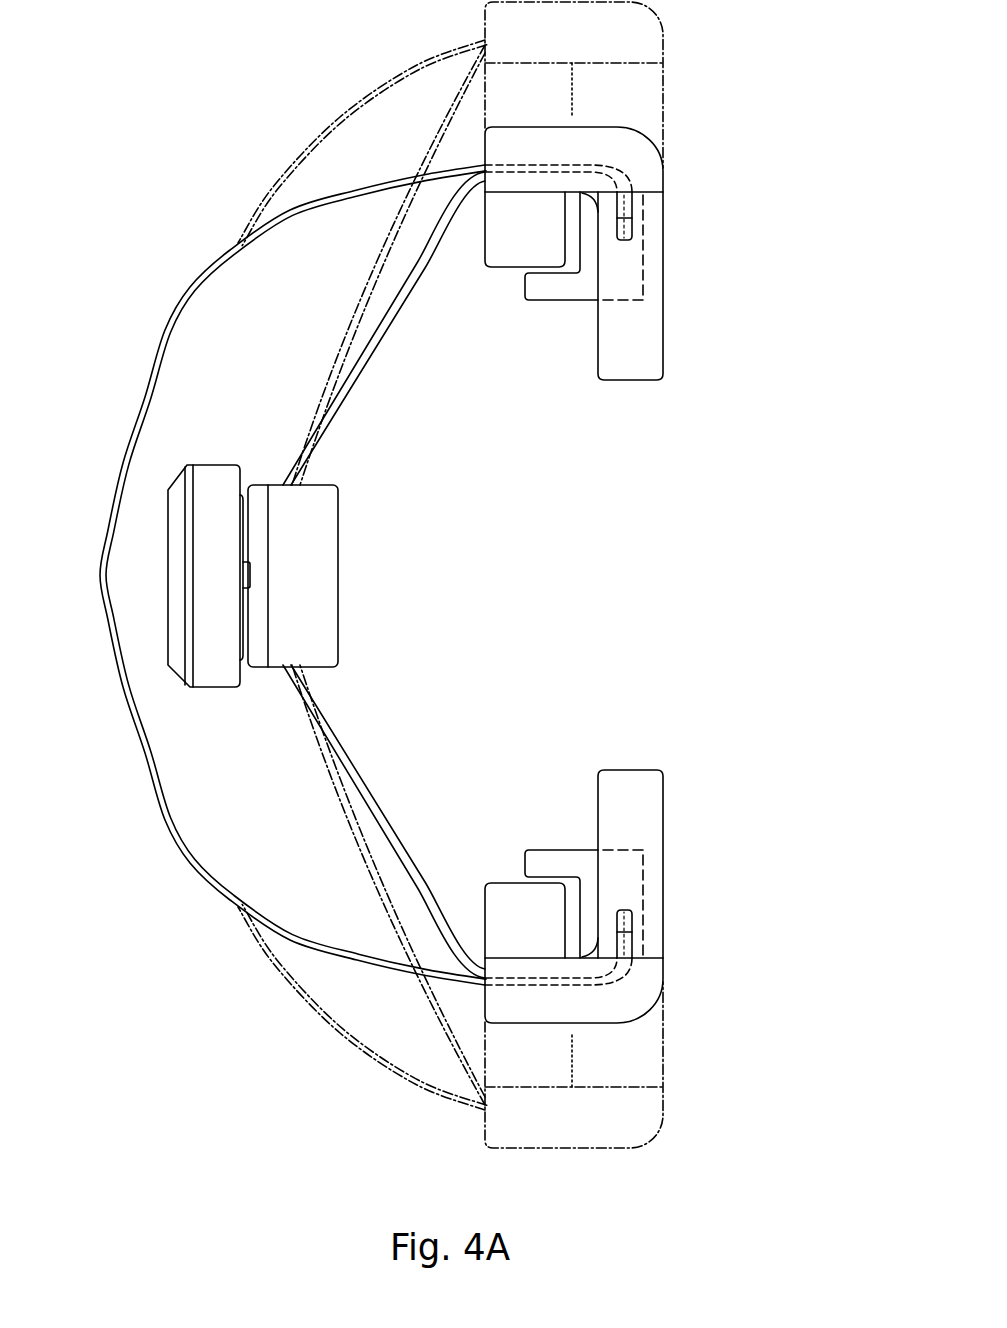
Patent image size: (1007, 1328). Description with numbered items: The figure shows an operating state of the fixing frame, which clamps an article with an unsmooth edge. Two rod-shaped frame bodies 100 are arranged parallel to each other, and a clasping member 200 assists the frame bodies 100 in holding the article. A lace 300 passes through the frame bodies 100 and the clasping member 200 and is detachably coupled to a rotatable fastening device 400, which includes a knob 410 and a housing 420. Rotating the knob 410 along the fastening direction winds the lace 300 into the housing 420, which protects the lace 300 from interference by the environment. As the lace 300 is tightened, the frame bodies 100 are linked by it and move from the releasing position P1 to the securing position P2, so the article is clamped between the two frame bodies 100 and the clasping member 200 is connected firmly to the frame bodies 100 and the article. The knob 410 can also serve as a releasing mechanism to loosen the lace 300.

The frame body 100 is at (645, 170).
The clasping member 200 is at (555, 288).
The lace 300 is at (190, 288).
The rotatable fastening device 400 is at (251, 502).
The knob 410 is at (217, 478).
The housing 420 is at (282, 488).
The releasing position P1 is at (700, 55).
The securing position P2 is at (700, 248).